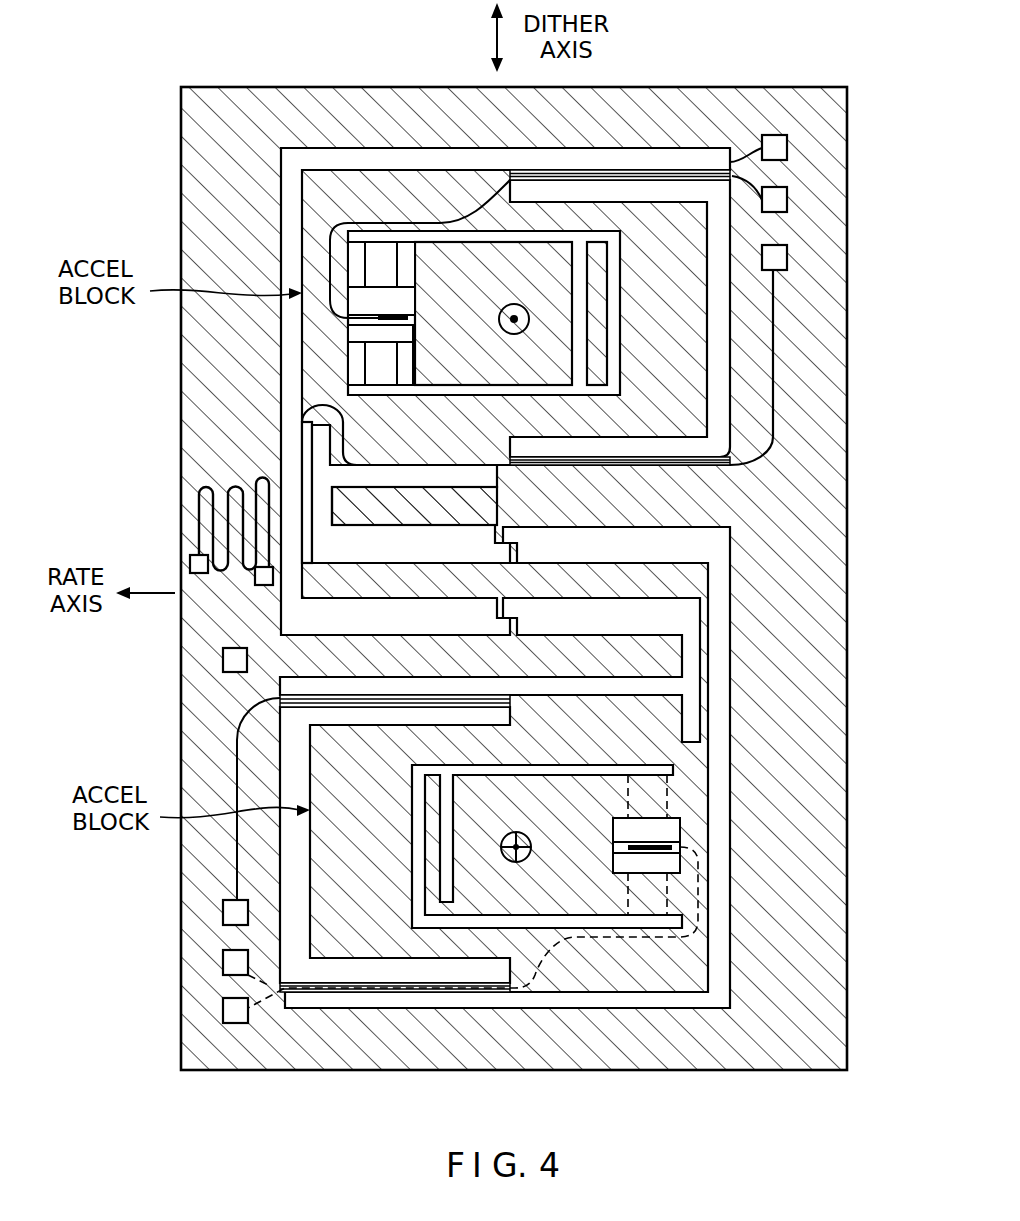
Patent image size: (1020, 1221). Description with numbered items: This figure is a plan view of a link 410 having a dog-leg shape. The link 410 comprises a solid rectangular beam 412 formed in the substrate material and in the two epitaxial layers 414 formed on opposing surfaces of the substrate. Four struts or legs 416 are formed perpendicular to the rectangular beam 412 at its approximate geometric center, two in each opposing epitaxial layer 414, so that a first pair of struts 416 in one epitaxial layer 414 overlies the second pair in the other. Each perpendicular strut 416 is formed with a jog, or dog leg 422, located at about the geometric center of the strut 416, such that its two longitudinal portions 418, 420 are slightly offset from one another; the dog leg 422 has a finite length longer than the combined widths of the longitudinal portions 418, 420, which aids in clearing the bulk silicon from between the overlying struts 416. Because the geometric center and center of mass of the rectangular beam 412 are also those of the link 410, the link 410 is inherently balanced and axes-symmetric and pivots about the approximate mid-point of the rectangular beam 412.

The link 410 is at (683, 580).
The solid rectangular beam 412 is at (673, 563).
The epitaxial layer 414 is at (812, 1008).
The perpendicular strut 416 is at (515, 617).
The longitudinal portion 418 is at (497, 540).
The longitudinal portion 420 is at (517, 552).
The dog leg 422 is at (500, 552).